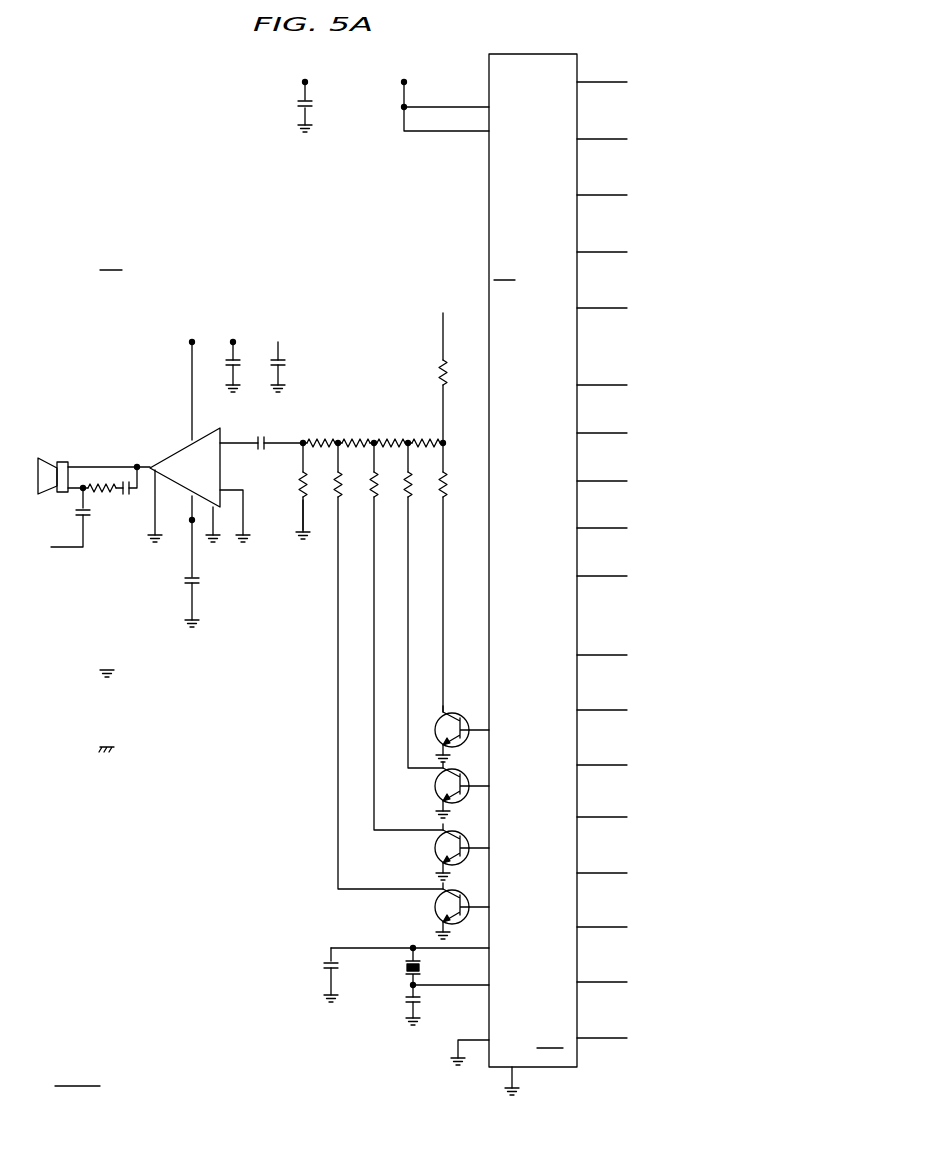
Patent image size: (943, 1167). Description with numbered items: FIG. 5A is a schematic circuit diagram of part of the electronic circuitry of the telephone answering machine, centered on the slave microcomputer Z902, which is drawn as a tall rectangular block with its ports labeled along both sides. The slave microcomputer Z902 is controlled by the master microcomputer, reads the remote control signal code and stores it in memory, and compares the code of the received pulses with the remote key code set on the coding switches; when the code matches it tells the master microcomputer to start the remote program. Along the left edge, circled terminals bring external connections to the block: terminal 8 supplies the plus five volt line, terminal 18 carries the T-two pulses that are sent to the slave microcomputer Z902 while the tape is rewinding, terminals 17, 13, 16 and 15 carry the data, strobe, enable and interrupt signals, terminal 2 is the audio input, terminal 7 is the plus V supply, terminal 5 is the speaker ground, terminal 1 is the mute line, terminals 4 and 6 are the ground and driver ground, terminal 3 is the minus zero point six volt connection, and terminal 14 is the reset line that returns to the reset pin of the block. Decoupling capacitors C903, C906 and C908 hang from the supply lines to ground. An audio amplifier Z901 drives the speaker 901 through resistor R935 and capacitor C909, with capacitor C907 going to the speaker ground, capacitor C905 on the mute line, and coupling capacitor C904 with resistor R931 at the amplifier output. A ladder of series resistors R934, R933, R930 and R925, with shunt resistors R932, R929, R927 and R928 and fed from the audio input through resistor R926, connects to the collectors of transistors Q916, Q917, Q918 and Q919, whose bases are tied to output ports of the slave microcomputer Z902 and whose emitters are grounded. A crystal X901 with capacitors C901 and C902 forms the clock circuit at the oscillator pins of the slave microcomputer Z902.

The remote control signal coding switches 8 is at (488, 82).
The T2 pulses connector pin 18 is at (488, 195).
The data connector pin 17 is at (488, 219).
The strobe connector pin 13 is at (488, 242).
The enable connector pin 16 is at (488, 266).
The interrupt connector pin 15 is at (488, 289).
The audio input connector pin 2 is at (443, 313).
The +V connector pin 7 is at (278, 342).
The speaker ground connector pin 5 is at (86, 560).
The mute connector pin 1 is at (192, 520).
The ground connector pin 4 is at (107, 670).
The driver ground connector pin 6 is at (107, 747).
The -0.6V connector pin 3 is at (130, 882).
The reset connector pin 14 is at (555, 1067).
The speaker SPK 901 is at (93, 462).
The audio amplifier Z901 is at (203, 442).
The slave microcomputer Z902 is at (539, 574).
The capacitor C901 is at (348, 975).
The capacitor C902 is at (432, 1005).
The capacitor C903 is at (325, 106).
The capacitor C904 is at (276, 429).
The capacitor C905 is at (213, 573).
The capacitor C906 is at (220, 352).
The capacitor C907 is at (60, 517).
The capacitor C908 is at (298, 367).
The capacitor C909 is at (128, 493).
The crystal X901 is at (432, 966).
The resistor R925 is at (425, 456).
The resistor R926 is at (418, 512).
The resistor R927 is at (406, 636).
The resistor R928 is at (423, 582).
The resistor R929 is at (388, 666).
The resistor R930 is at (393, 431).
The resistor R931 is at (284, 491).
The resistor R932 is at (320, 514).
The resistor R933 is at (356, 431).
The resistor R934 is at (320, 431).
The resistor R935 is at (101, 478).
The transistor Q916 is at (462, 723).
The transistor Q917 is at (442, 790).
The transistor Q918 is at (443, 852).
The transistor Q919 is at (443, 911).